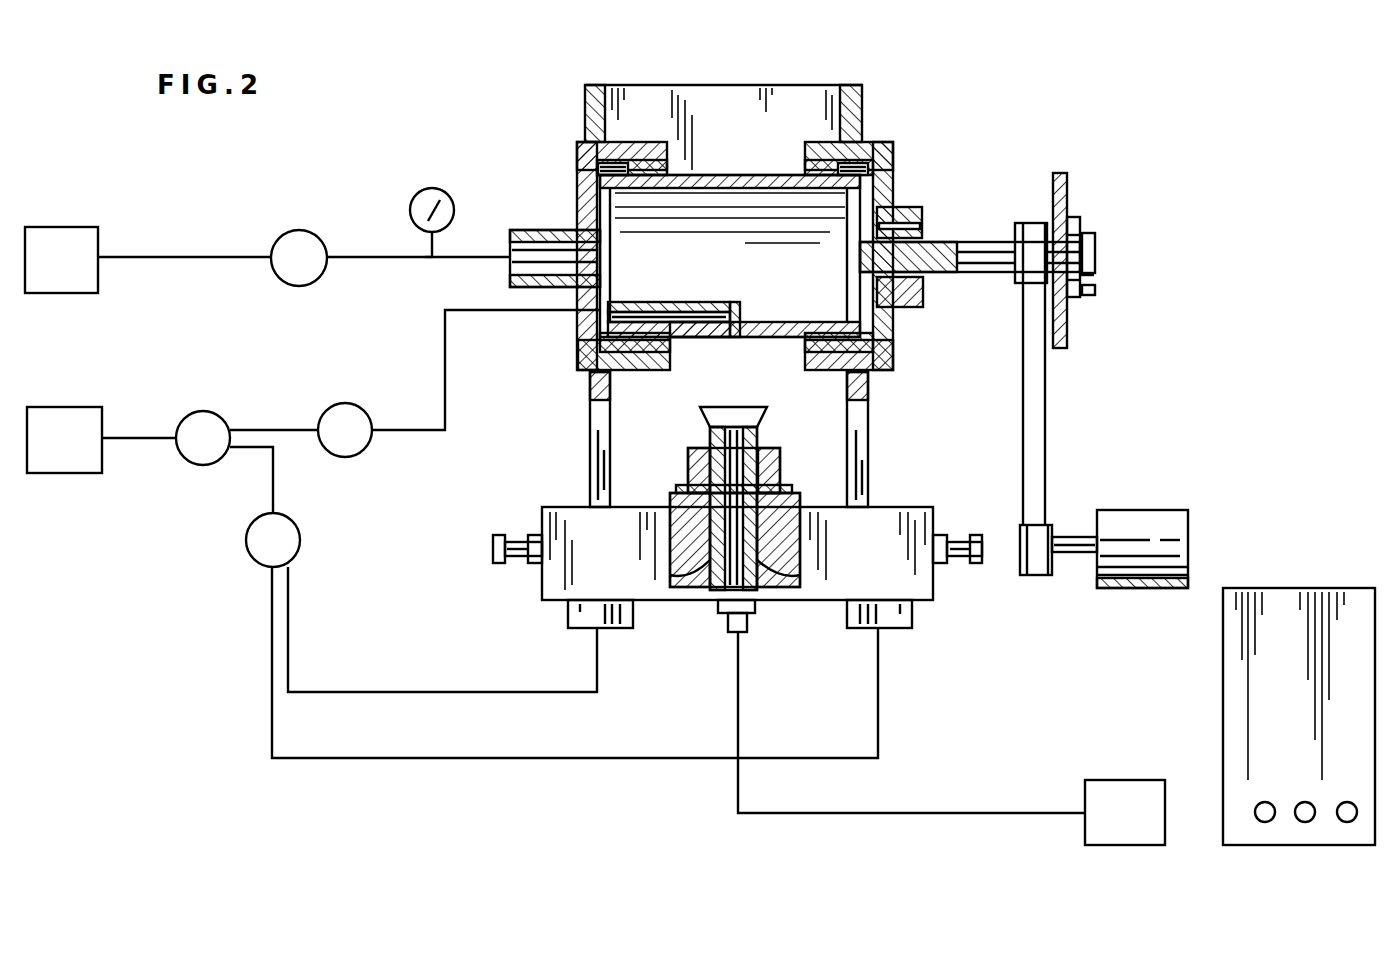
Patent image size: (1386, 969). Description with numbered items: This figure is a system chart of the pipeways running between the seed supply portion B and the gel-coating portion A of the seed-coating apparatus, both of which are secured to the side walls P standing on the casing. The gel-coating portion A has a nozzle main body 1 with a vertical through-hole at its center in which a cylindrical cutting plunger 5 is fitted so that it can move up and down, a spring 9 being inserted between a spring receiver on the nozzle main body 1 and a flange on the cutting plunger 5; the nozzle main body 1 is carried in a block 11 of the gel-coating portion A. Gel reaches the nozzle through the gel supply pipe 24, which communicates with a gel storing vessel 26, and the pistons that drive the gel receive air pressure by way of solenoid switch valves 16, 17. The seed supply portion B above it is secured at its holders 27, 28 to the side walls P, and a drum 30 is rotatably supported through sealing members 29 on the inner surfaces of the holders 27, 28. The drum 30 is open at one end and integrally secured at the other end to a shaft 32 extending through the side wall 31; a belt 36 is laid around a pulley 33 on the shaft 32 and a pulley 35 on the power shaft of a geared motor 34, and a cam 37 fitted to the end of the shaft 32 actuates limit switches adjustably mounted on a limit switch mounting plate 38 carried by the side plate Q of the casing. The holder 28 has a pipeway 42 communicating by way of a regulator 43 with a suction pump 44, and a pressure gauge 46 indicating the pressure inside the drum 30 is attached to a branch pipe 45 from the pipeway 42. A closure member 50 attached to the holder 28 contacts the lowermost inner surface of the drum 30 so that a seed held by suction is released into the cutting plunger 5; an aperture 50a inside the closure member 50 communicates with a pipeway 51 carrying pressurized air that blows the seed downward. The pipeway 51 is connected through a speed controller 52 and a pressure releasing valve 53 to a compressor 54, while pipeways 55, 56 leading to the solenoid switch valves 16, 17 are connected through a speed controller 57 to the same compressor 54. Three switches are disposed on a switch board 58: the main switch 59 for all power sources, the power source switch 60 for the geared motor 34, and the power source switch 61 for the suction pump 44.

The nozzle main body 1 is at (690, 580).
The cutting plunger 5 is at (780, 495).
The spring 9 is at (780, 468).
The press table 11 is at (570, 507).
The solenoid switch valve 16 is at (912, 615).
The solenoid switch valve 17 is at (568, 614).
The gel supply pipe 24 is at (748, 622).
The controller 26 is at (1128, 798).
The holder 27 is at (888, 145).
The holder 28 is at (580, 148).
The sealing member 29 is at (630, 140).
The drum 30 is at (766, 176).
The side wall 31 is at (918, 212).
The shaft 32 is at (935, 248).
The pulley 33 is at (1078, 240).
The geared motor 34 is at (1155, 512).
The pulley 35 is at (1048, 525).
The belt 36 is at (1047, 405).
The cam 37 is at (1096, 262).
The limit switch mounting plate 38 is at (1096, 245).
The pipeway 42 is at (522, 230).
The regulator 43 is at (286, 240).
The suction pump 44 is at (86, 232).
The branch pipe 45 is at (428, 250).
The pressure gauge 46 is at (430, 190).
The closure member 50 is at (732, 306).
The aperture 50a is at (665, 302).
The pipeway 51 is at (445, 345).
The speed controller 52 is at (337, 408).
The pressure releasing valve 53 is at (206, 418).
The compressor 54 is at (92, 412).
The pipeway 55 is at (468, 758).
The pipeway 56 is at (402, 692).
The speed controller 57 is at (300, 530).
The switch board 58 is at (1282, 588).
The main switch 59 is at (1257, 805).
The power source switch 60 is at (1300, 803).
The power source switch 61 is at (1345, 803).
The gel-coating portion A is at (878, 455).
The seed supply portion B is at (918, 160).
The side wall P is at (590, 440).
The side plate Q is at (1062, 178).